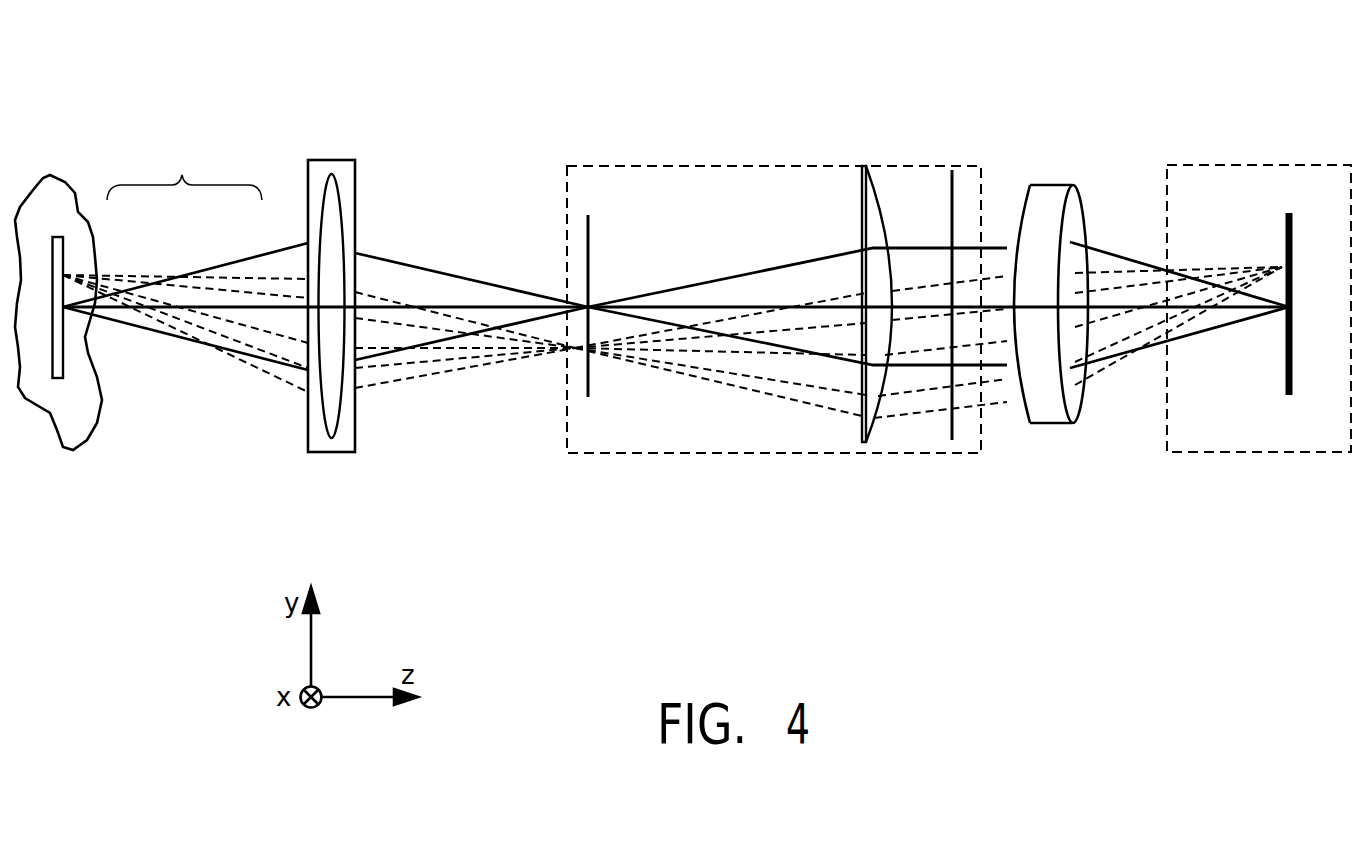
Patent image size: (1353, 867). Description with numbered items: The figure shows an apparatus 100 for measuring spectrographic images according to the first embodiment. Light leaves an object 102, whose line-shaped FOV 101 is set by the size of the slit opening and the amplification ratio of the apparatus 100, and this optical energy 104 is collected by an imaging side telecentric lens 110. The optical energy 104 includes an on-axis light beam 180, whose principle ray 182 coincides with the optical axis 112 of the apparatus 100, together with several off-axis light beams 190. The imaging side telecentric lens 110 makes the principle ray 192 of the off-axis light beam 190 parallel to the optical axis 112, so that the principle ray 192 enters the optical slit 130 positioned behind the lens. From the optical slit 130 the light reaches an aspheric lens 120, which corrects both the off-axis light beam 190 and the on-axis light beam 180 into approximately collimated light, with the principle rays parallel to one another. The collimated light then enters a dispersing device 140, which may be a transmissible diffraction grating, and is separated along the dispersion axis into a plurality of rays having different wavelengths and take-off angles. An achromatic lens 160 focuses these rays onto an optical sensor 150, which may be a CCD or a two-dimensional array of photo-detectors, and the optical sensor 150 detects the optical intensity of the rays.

The apparatus 100 is at (521, 118).
The line-shaped FOV 101 is at (58, 378).
The object 102 is at (62, 186).
The optical energy 104 is at (184, 169).
The imaging side telecentric lens 110 is at (330, 452).
The optical axis 112 is at (509, 304).
The aspheric lens 120 is at (877, 190).
The optical slit 130 is at (588, 381).
The dispersing device 140 is at (952, 190).
The optical sensor 150 is at (1293, 367).
The achromatic lens 160 is at (1050, 425).
The on-axis light beam 180 is at (228, 263).
The principle ray of the on-axis light beam 182 is at (458, 304).
The off-axis light beam 190 is at (135, 273).
The principle ray of the off-axis light beam 192 is at (490, 350).